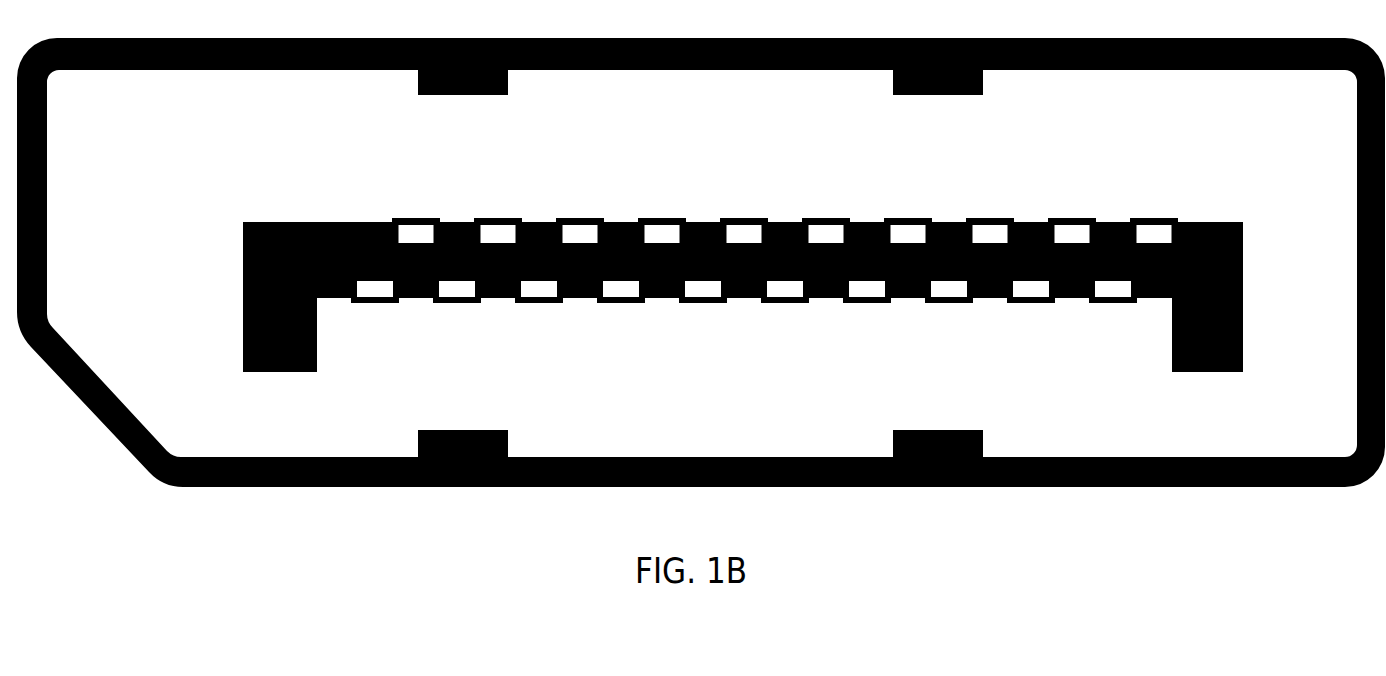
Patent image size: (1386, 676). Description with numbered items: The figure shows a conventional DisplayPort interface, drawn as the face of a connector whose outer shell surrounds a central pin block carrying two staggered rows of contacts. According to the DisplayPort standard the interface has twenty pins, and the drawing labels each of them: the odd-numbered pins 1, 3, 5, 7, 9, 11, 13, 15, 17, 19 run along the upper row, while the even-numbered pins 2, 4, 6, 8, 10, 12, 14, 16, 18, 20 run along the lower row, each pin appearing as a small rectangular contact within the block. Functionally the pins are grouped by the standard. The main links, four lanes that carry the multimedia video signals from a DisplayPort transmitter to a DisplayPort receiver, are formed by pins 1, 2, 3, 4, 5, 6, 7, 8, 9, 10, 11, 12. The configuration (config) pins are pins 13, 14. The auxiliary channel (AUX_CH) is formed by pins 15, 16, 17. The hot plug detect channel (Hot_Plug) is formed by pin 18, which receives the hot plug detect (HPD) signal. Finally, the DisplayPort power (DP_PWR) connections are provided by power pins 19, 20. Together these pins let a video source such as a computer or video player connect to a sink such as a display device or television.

The pin 1 is at (1154, 205).
The pin 2 is at (1113, 319).
The pin 3 is at (1072, 205).
The pin 4 is at (1031, 319).
The pin 5 is at (990, 205).
The pin 6 is at (949, 319).
The pin 7 is at (908, 205).
The pin 8 is at (867, 319).
The pin 9 is at (826, 205).
The pin 10 is at (785, 319).
The pin 11 is at (744, 205).
The pin 12 is at (703, 319).
The configuration pin 13 is at (662, 205).
The configuration pin 14 is at (621, 319).
The auxiliary channel pin 15 is at (580, 205).
The auxiliary channel pin 16 is at (539, 319).
The auxiliary channel pin 17 is at (498, 205).
The hot plug detect pin 18 is at (457, 319).
The power pin 19 is at (416, 205).
The power pin 20 is at (375, 319).